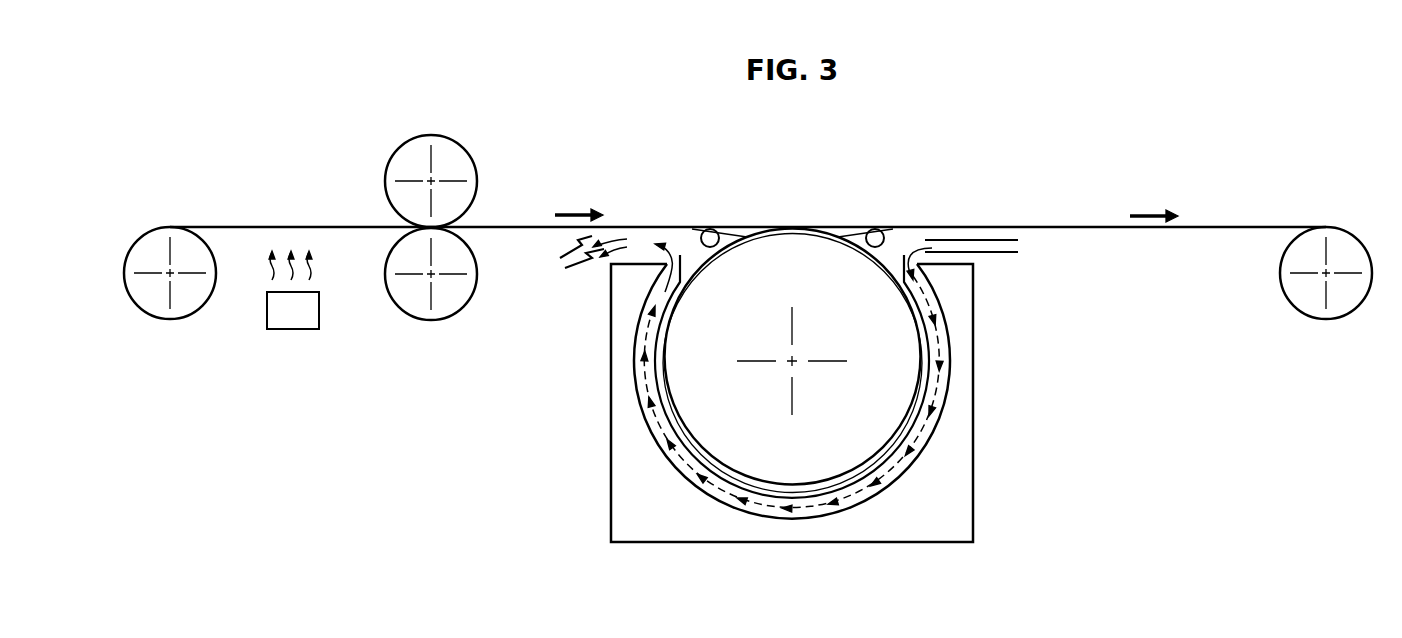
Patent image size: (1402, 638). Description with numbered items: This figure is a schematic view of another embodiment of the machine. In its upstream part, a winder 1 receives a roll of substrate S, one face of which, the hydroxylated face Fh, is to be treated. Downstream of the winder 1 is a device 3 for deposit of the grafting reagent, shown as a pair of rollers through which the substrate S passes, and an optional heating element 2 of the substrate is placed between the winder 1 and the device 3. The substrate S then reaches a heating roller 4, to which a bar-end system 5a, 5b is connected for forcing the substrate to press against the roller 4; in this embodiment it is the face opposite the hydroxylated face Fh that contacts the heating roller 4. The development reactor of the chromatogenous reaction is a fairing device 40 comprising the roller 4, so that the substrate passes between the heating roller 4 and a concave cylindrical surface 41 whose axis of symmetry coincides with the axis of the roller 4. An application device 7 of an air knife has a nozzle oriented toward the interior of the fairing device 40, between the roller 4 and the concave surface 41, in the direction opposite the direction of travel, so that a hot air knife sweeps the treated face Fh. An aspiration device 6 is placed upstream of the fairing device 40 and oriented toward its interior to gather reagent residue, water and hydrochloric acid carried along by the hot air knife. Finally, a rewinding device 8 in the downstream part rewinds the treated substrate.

The winder 1 is at (170, 320).
The heating element 2 is at (319, 308).
The device for deposit of the grafting reagent 3 is at (496, 154).
The heating roller 4 is at (885, 380).
The bar-end system 5a is at (699, 233).
The bar-end system 5b is at (886, 233).
The aspiration device 6 is at (575, 268).
The application device of an air knife 7 is at (995, 253).
The rewinding device 8 is at (1323, 319).
The fairing device 40 is at (980, 471).
The concave cylindrical surface 41 is at (928, 433).
The substrate S is at (228, 222).
The hydroxylated face Fh is at (255, 235).